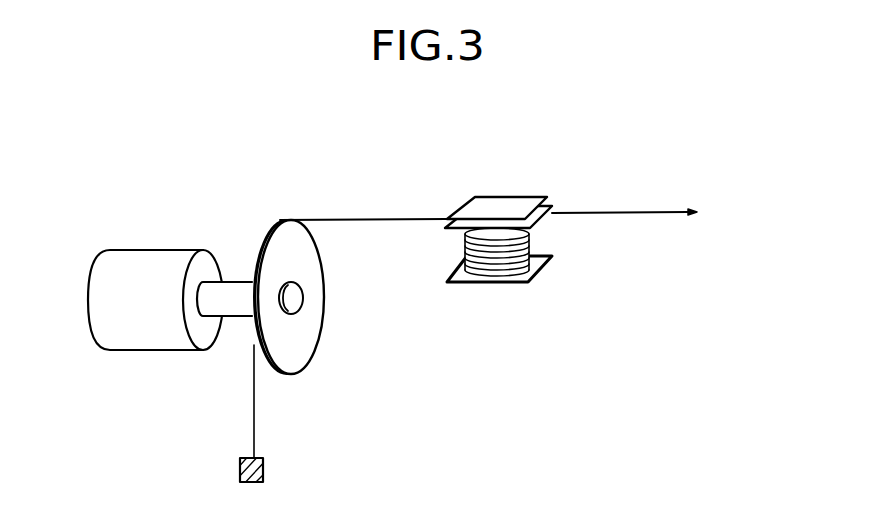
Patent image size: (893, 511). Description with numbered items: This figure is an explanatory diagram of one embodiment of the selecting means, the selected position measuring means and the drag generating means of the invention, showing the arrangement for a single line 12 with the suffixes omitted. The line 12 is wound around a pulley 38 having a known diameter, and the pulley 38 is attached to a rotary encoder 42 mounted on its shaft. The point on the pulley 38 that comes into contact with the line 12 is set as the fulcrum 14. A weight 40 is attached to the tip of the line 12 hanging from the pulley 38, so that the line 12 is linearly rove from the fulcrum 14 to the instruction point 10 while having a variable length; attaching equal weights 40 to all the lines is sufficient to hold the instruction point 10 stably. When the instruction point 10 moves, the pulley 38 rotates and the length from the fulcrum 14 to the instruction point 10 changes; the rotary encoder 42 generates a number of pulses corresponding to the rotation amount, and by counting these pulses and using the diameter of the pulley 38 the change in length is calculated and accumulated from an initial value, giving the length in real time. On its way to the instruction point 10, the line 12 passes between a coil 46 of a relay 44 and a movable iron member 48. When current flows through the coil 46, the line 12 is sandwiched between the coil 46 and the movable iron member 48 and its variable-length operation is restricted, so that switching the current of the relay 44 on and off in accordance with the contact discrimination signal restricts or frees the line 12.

The instruction point 10 is at (727, 212).
The line 12 is at (620, 213).
The fulcrum 14 is at (299, 220).
The pulley 38 is at (300, 362).
The weight 40 is at (263, 470).
The rotary encoder 42 is at (177, 257).
The relay 44 is at (513, 196).
The coil 46 is at (513, 283).
The movable iron member 48 is at (470, 212).